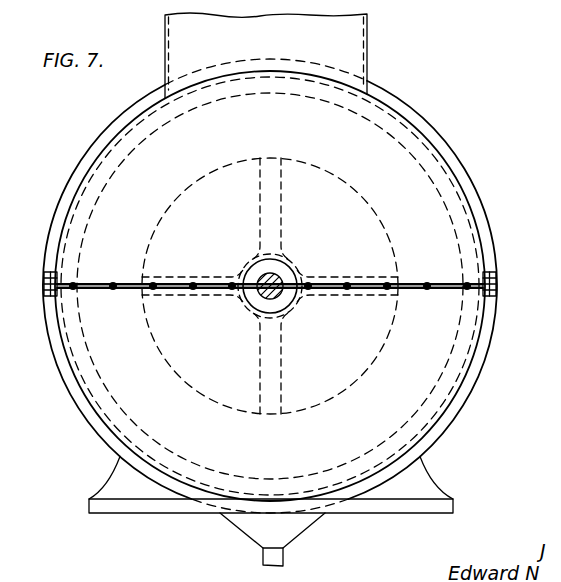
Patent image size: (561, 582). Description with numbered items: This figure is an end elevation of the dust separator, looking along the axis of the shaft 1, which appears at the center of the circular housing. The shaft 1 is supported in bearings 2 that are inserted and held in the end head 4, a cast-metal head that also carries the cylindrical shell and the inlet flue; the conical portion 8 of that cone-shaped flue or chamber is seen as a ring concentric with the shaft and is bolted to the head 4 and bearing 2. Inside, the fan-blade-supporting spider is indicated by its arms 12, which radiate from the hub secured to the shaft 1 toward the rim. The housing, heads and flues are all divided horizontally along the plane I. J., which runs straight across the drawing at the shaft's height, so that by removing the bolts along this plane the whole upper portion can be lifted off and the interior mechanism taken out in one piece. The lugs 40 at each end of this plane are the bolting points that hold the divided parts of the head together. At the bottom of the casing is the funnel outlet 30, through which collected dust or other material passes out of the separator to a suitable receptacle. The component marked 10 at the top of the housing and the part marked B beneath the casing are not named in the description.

The shaft 1 is at (262, 292).
The bearings 2 is at (288, 263).
The inlet head 4 is at (441, 137).
The conical portion of flue or chamber 8 is at (270, 286).
The hopper tank 10 is at (326, 14).
The arms 12 is at (273, 213).
The funnel outlet 30 is at (230, 528).
The lugs 40 is at (47, 296).
The base B is at (142, 507).
The dividing plane I. J. I is at (507, 289).
The dividing plane I. J. J is at (21, 293).